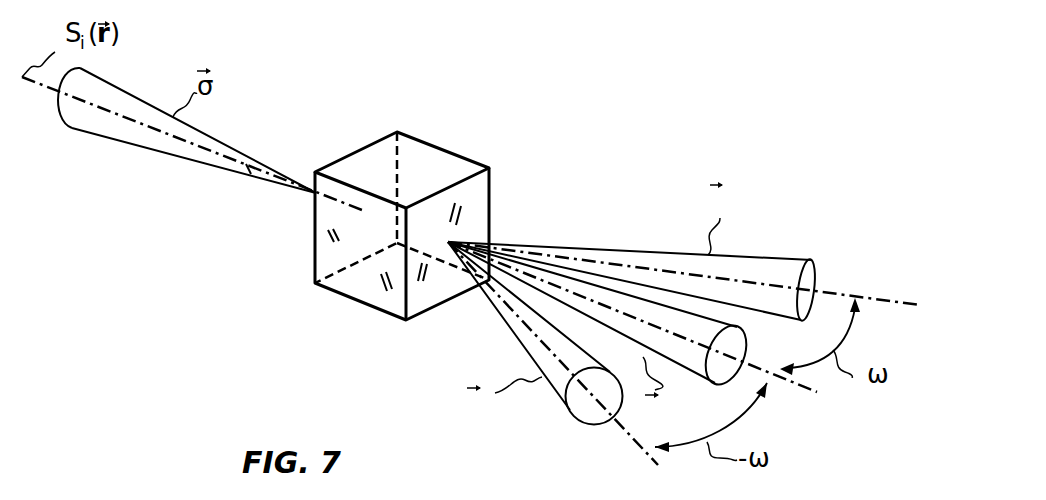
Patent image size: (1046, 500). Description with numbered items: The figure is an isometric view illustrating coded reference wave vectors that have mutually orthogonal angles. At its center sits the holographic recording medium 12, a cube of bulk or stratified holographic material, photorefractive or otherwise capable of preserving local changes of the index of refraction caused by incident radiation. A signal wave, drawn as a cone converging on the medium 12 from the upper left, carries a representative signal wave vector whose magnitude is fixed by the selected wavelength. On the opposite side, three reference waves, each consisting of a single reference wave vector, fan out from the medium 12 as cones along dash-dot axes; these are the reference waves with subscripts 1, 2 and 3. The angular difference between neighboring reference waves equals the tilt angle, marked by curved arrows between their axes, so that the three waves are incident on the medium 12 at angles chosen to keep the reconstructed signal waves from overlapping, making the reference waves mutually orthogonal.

The holographic recording medium 12 is at (443, 147).
The first receiver direction 1 is at (863, 297).
The second receiver direction 2 is at (782, 380).
The third receiver direction 3 is at (625, 432).